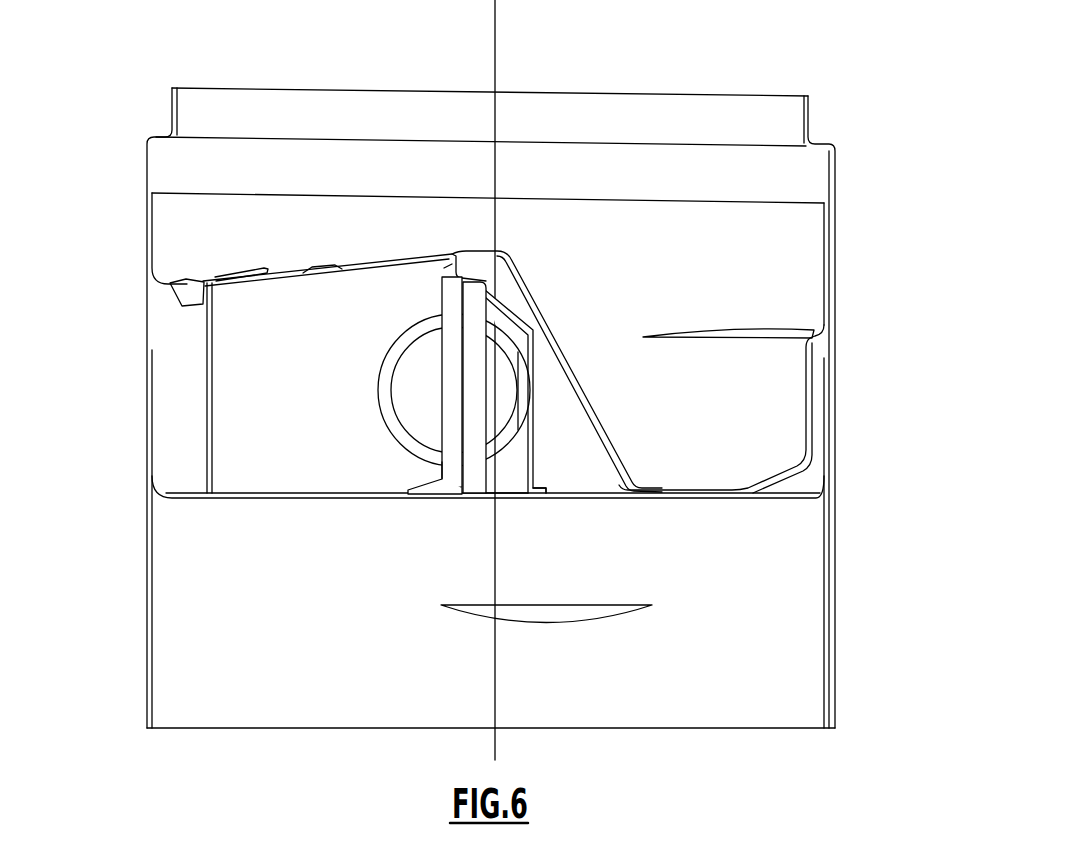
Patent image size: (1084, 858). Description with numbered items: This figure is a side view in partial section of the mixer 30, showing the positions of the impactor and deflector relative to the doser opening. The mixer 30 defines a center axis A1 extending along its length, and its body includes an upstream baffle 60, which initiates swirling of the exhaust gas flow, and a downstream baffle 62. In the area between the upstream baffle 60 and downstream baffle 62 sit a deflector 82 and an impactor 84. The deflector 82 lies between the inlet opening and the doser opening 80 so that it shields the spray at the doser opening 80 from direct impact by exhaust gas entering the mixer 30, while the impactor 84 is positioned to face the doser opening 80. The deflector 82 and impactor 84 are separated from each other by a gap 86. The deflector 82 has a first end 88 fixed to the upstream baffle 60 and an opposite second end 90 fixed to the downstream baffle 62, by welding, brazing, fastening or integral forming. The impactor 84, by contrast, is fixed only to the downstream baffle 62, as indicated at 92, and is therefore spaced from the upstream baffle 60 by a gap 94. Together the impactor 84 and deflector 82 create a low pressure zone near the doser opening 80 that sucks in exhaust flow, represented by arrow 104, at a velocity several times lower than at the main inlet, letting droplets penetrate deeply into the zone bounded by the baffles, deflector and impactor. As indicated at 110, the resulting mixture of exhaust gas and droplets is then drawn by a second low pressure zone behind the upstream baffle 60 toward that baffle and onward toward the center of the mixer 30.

The center axis A1 is at (498, 70).
The mixer 30 is at (858, 171).
The upstream baffle 60 is at (160, 287).
The downstream baffle 62 is at (160, 498).
The doser opening 80 is at (380, 386).
The deflector 82 is at (533, 458).
The impactor 84 is at (453, 304).
The gap 86 is at (509, 481).
The first end 88 is at (458, 253).
The second end 90 is at (540, 493).
The impactor attachment location 92 is at (424, 494).
The gap 94 is at (446, 268).
The sucked exhaust flow 104 is at (442, 470).
The mixture flow toward upstream baffle 110 is at (517, 343).